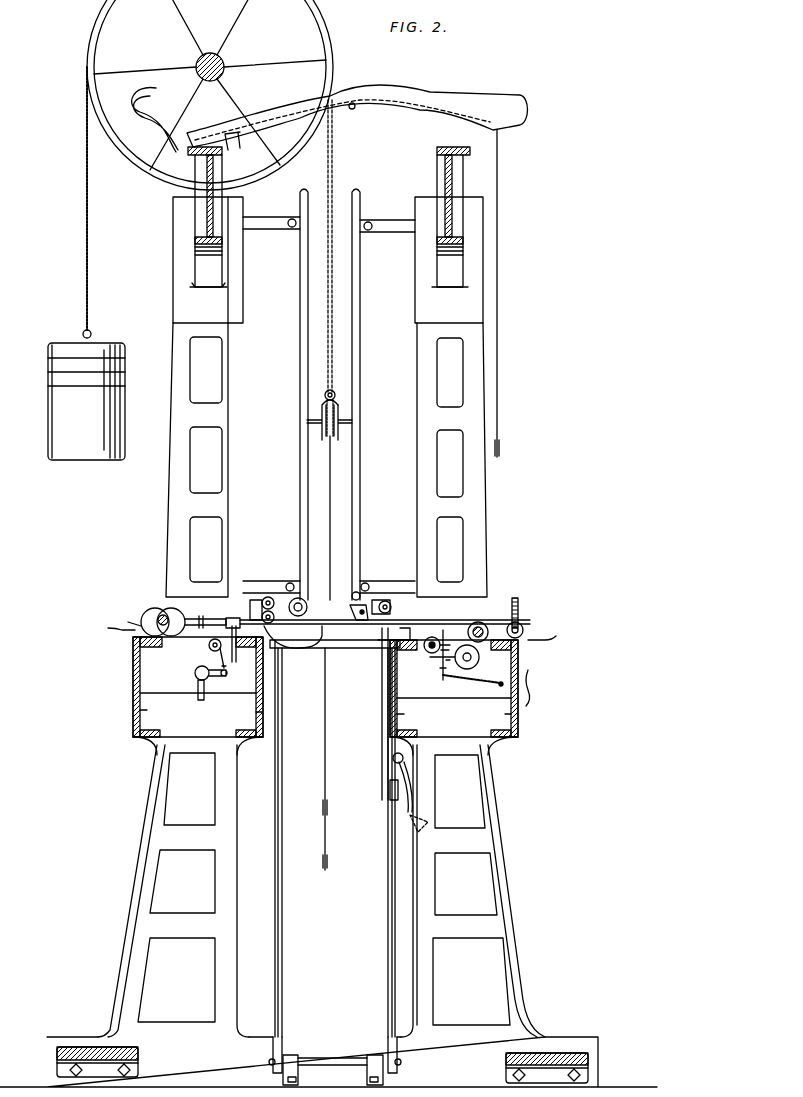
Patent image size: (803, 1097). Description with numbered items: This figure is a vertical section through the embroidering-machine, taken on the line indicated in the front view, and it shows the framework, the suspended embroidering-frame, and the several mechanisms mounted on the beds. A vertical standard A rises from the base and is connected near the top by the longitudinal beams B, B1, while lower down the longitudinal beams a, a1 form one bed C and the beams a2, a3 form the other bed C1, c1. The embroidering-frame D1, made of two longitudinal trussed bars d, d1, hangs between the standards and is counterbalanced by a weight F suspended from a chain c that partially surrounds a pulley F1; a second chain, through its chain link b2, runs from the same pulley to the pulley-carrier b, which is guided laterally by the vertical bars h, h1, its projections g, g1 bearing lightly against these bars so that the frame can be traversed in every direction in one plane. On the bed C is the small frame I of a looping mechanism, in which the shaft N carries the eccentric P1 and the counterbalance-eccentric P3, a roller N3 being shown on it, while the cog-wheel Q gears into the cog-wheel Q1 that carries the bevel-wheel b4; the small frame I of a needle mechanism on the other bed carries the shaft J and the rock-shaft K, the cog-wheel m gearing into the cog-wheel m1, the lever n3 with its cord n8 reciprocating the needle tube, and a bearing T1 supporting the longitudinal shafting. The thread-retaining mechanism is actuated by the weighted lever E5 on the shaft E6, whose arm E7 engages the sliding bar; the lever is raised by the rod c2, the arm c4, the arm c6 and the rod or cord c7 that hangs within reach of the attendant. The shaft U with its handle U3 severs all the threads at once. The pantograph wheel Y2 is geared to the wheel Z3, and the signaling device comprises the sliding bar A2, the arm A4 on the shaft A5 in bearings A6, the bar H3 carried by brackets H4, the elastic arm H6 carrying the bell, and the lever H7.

The pulley F1 is at (138, 18).
The weight F is at (86, 395).
The chain c is at (92, 198).
The bed c1 is at (338, 246).
The rod c2 is at (221, 260).
The arm c4 is at (245, 142).
The arm c6 is at (357, 117).
The rod or cord c7 is at (504, 293).
The longitudinal beam B is at (205, 214).
The longitudinal beam B1 is at (449, 235).
The vertical standard A is at (173, 412).
The vertical bar h is at (275, 394).
The vertical bar h1 is at (383, 394).
The pulley-carrier b is at (335, 389).
The projection g is at (322, 419).
The projection g1 is at (344, 419).
The chain link b2 is at (339, 420).
The trussed bar d is at (335, 518).
The trussed bar d1 is at (336, 759).
The embroidering-frame D1 is at (322, 700).
The sliding bar A2 is at (280, 655).
The arm A4 is at (320, 842).
The shaft A5 is at (335, 1055).
The bearings A6 is at (333, 1070).
The bed C is at (122, 640).
The bed C1 is at (530, 645).
The longitudinal beam a is at (147, 710).
The longitudinal beam a1 is at (251, 715).
The longitudinal beam a2 is at (408, 715).
The longitudinal beam a3 is at (501, 715).
The weighted lever E5 is at (202, 669).
The shaft E6 is at (189, 695).
The arm E7 is at (294, 628).
The shaft N is at (163, 617).
The roller N3 is at (209, 648).
The counterbalance-eccentric P3 is at (131, 614).
The eccentric P1 is at (203, 616).
The cog-wheel Q is at (233, 611).
The cog-wheel Q1 is at (242, 650).
The bevel-wheel b4 is at (218, 658).
The bearing T1 is at (270, 635).
The small frame I is at (331, 633).
The shaft U is at (353, 597).
The handle U3 is at (530, 679).
The cog-wheel m is at (430, 626).
The cog-wheel m1 is at (432, 658).
The lever n3 is at (439, 655).
The cord n8 is at (473, 684).
The shaft J is at (460, 658).
The rock-shaft K is at (476, 622).
The wheel Y2 is at (520, 605).
The wheel Z3 is at (524, 629).
The bar H3 is at (390, 792).
The brackets H4 is at (392, 755).
The elastic arm H6 is at (404, 782).
The lever H7 is at (395, 820).